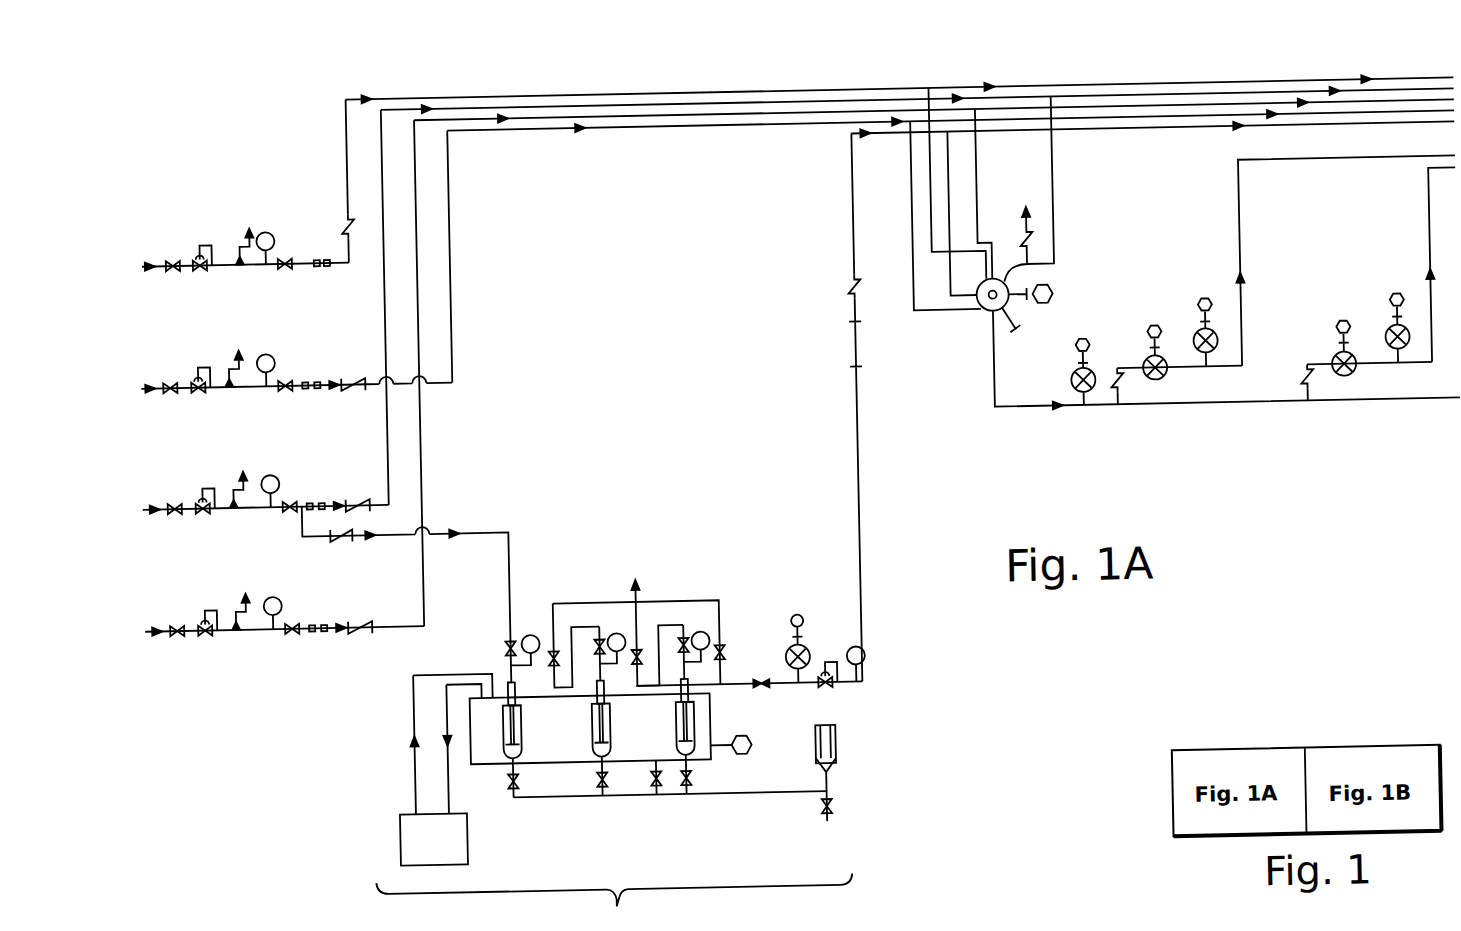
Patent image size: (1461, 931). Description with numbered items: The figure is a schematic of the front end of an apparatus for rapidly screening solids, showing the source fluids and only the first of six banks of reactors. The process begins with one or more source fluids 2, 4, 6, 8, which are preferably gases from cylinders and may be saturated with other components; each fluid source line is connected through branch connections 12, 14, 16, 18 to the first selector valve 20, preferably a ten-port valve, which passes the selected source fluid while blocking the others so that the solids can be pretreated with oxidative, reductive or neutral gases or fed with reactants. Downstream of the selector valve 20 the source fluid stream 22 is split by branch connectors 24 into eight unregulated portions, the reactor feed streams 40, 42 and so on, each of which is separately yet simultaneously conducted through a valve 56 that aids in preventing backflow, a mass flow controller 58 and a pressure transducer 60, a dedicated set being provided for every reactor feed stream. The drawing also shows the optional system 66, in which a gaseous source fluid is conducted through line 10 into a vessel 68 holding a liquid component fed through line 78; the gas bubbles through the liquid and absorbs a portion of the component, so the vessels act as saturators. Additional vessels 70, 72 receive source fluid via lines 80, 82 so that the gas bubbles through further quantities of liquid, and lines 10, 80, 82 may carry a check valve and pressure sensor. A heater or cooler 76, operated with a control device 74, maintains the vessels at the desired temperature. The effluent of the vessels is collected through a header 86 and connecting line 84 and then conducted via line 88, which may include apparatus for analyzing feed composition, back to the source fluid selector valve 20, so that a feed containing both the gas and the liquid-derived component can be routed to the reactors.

The source fluid 2 is at (144, 256).
The source fluid 4 is at (141, 378).
The source fluid 6 is at (140, 499).
The source fluid 8 is at (141, 621).
The line 10 is at (482, 528).
The gas line to mixing valve 12 is at (936, 112).
The gas line to mixing valve 14 is at (1058, 100).
The gas line to mixing valve 16 is at (984, 148).
The gas line to mixing valve 18 is at (917, 128).
The selector valve 20 is at (990, 320).
The source fluid stream 22 is at (1020, 413).
The branch connector 24 is at (1119, 414).
The reactor feed stream 40 is at (1244, 255).
The reactor feed stream 42 is at (1434, 255).
The valve 56 is at (1125, 392).
The mass flow controller 58 is at (1145, 372).
The pressure transducer 60 is at (1196, 345).
The optional system 66 is at (614, 902).
The vessel 68 is at (516, 722).
The vessel 70 is at (605, 722).
The vessel 72 is at (690, 722).
The control device 74 is at (460, 834).
The heater or cooler 76 is at (705, 736).
The line 78 is at (704, 793).
The line 80 is at (586, 622).
The line 82 is at (660, 623).
The gas supply line 84 is at (714, 683).
The pressurizing gas header 86 is at (698, 600).
The line 88 is at (860, 484).